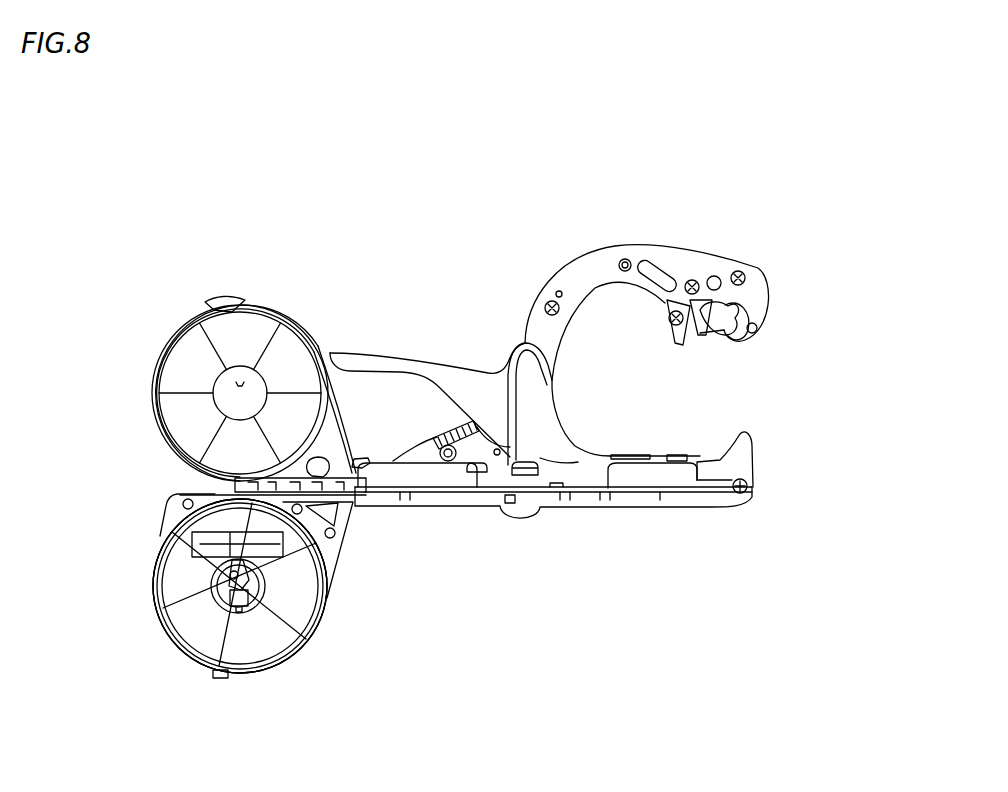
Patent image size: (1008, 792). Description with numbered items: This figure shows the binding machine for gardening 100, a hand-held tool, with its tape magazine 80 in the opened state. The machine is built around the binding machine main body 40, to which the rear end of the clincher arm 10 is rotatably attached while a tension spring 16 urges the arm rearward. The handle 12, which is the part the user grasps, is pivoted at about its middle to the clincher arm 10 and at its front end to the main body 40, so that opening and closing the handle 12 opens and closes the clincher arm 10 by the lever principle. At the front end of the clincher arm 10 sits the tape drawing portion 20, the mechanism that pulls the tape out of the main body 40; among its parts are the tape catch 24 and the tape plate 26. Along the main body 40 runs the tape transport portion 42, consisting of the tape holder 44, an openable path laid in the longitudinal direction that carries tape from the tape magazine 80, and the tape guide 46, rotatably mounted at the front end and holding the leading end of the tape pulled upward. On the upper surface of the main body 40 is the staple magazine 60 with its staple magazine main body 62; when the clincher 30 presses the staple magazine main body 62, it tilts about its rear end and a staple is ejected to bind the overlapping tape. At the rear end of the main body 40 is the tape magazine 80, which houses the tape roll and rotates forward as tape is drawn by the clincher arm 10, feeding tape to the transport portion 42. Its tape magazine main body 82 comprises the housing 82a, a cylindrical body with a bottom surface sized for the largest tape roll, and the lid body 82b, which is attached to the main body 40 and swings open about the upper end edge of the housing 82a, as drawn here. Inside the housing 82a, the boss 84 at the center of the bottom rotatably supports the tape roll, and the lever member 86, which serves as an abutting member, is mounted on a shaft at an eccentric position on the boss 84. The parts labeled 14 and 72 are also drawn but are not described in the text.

The binding machine for gardening 100 is at (313, 222).
The clincher arm 10 is at (598, 258).
The handle 12 is at (386, 350).
The tape holding portion 14 is at (395, 462).
The tension spring 16 is at (450, 440).
The tape drawing portion 20 is at (736, 264).
The tape catch 24 is at (738, 332).
The tape plate 26 is at (701, 332).
The clincher 30 is at (676, 341).
The binding machine main body 40 is at (462, 508).
The tape transport portion 42 is at (721, 508).
The tape holder 44 is at (606, 510).
The tape guide 46 is at (746, 438).
The staple magazine 60 is at (621, 454).
The staple magazine main body 62 is at (689, 454).
The tape feed portion 72 is at (360, 458).
The tape magazine 80 is at (322, 603).
The tape magazine main body 82 is at (110, 456).
The housing 82a is at (178, 548).
The lid body 82b is at (190, 455).
The boss 84 is at (246, 605).
The lever member 86 is at (205, 572).